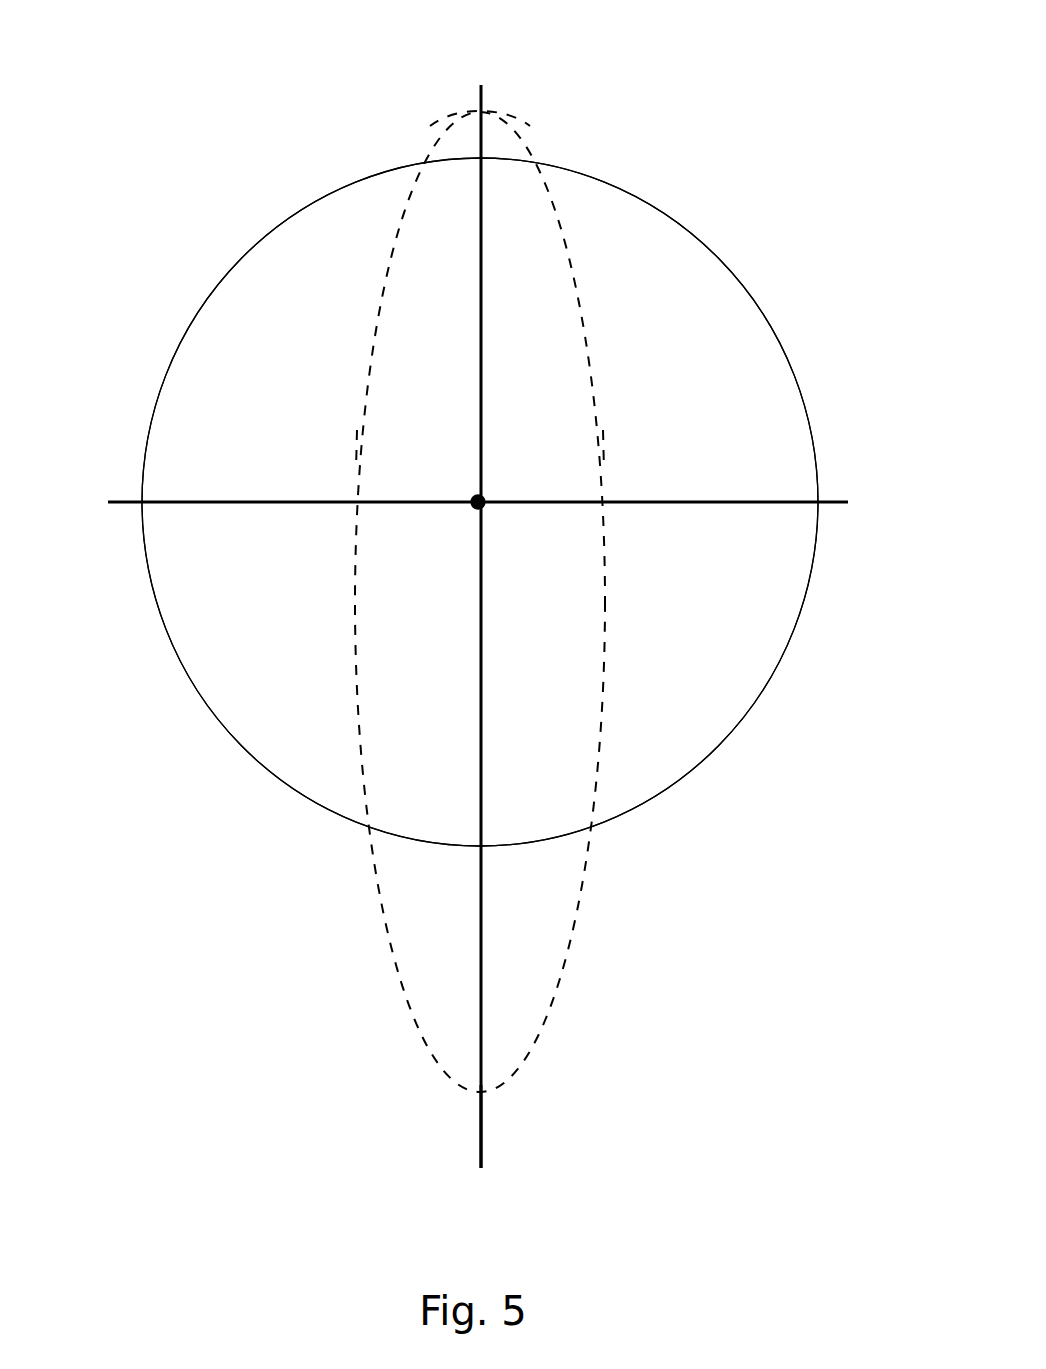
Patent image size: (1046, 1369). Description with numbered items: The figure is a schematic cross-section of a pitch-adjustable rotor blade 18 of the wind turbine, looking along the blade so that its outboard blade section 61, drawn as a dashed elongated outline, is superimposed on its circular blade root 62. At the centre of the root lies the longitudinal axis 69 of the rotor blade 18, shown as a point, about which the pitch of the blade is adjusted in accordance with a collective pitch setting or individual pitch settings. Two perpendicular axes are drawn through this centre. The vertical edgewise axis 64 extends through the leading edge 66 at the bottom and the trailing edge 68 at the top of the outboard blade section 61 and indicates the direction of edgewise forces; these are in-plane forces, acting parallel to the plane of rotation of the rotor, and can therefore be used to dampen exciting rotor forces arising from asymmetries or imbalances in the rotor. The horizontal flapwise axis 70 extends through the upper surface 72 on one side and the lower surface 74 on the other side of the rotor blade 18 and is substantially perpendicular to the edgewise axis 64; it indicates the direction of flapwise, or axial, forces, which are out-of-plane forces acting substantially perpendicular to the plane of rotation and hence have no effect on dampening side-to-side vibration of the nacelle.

The rotor blade 18 is at (190, 128).
The outboard blade section 61 is at (556, 206).
The circular blade root 62 is at (680, 224).
The edgewise axis 64 is at (481, 85).
The leading edge 66 is at (449, 1138).
The trailing edge 68 is at (452, 86).
The longitudinal axis 69 is at (481, 494).
The flapwise axis 70 is at (848, 502).
The upper surface 72 is at (320, 436).
The lower surface 74 is at (641, 442).